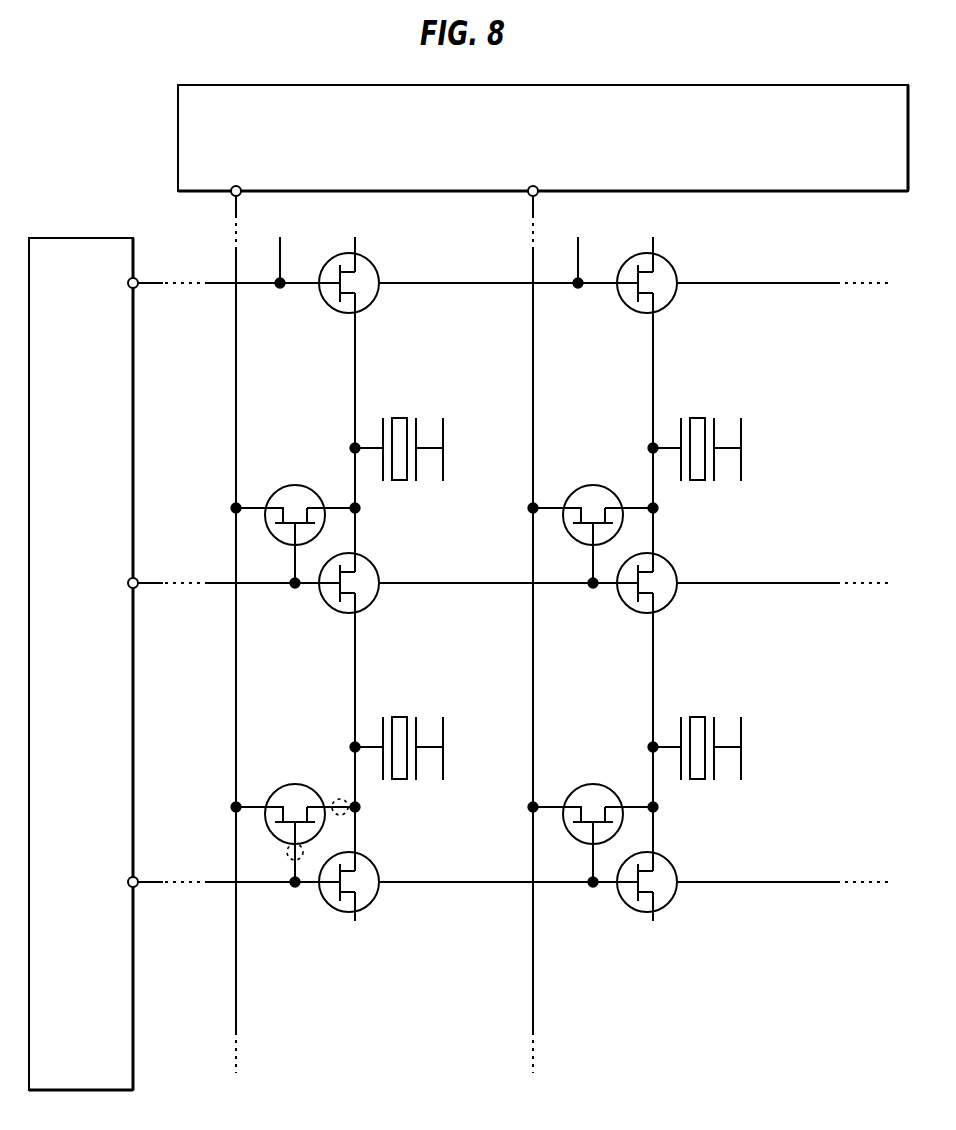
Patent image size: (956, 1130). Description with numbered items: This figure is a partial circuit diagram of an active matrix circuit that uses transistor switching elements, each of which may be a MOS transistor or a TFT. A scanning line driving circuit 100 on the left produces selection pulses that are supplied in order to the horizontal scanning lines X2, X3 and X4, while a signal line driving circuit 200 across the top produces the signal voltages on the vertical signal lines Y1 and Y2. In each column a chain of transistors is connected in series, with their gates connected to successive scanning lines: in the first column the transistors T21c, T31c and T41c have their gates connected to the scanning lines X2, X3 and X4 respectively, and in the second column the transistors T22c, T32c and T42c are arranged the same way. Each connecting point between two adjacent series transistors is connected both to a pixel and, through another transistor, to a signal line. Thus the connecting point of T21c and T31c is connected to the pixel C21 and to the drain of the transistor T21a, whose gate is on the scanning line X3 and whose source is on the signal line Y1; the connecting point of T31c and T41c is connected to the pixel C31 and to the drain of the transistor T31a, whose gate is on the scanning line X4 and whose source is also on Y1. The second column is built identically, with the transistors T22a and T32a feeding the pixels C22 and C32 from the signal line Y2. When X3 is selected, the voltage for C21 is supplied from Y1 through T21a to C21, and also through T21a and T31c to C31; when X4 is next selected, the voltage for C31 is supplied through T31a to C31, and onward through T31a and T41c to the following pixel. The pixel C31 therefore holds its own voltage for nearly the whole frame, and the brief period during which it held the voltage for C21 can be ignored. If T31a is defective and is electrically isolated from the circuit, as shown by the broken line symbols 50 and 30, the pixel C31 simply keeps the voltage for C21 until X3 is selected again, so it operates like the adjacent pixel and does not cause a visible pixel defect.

The scanning line driving circuit 100 is at (85, 238).
The signal line driving circuit 200 is at (178, 162).
The scanning line X2 is at (218, 286).
The scanning line X3 is at (218, 586).
The scanning line X4 is at (218, 885).
The signal line Y1 is at (238, 212).
The signal line Y2 is at (535, 212).
The transistor T21c is at (367, 267).
The transistor T22c is at (663, 259).
The transistor T31c is at (369, 600).
The transistor T32c is at (667, 600).
The transistor T41c is at (371, 900).
The transistor T42c is at (668, 898).
The transistor T21a is at (293, 487).
The transistor T22a is at (597, 487).
The transistor T31a is at (284, 785).
The transistor T32a is at (597, 785).
The pixel C21 is at (400, 481).
The pixel C22 is at (698, 481).
The pixel C31 is at (398, 780).
The pixel C32 is at (697, 780).
The broken line symbol 30 is at (337, 798).
The broken line symbol 50 is at (294, 855).